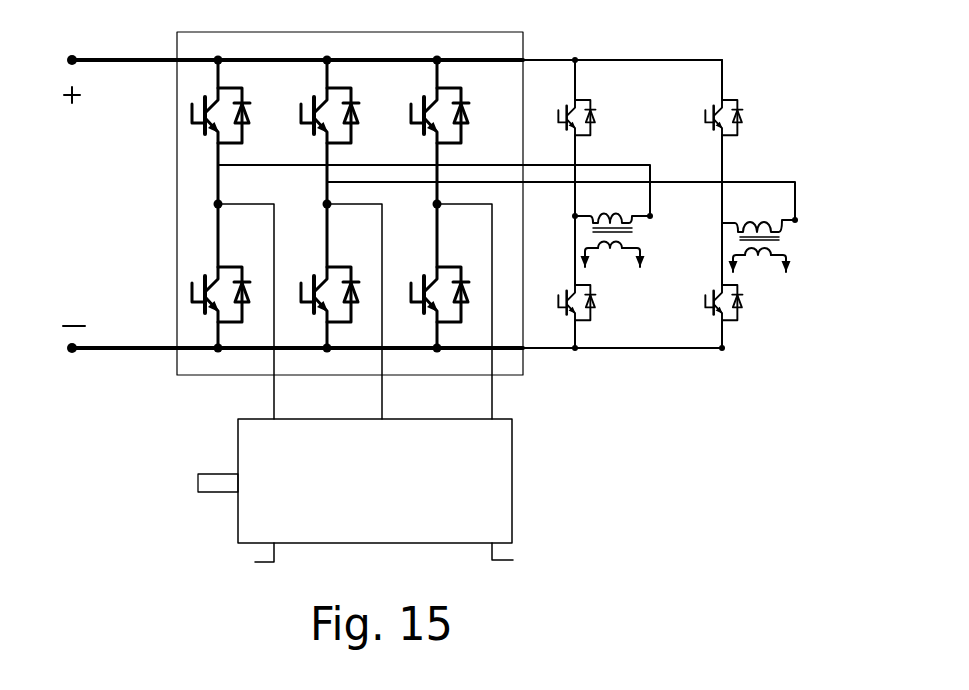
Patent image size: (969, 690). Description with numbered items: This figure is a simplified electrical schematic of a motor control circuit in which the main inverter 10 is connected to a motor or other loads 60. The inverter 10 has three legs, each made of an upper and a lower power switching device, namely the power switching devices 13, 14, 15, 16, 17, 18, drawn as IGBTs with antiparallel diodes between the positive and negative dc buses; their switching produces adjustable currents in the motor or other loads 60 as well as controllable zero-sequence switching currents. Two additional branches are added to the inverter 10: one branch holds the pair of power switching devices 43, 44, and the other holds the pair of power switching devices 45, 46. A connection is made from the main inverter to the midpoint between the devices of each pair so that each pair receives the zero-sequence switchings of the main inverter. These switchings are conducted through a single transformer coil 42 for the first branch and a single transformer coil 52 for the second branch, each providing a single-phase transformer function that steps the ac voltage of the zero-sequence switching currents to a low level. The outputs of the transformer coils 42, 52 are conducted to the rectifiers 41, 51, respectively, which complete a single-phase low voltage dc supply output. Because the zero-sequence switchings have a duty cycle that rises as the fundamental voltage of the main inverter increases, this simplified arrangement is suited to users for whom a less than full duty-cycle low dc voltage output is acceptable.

The inverter 10 is at (527, 55).
The power switching device 13 is at (188, 125).
The power switching device 14 is at (185, 300).
The power switching device 15 is at (299, 121).
The power switching device 16 is at (298, 298).
The power switching device 17 is at (410, 119).
The power switching device 18 is at (408, 298).
The rectifier 41 is at (619, 287).
The transformer coil 42 is at (593, 240).
The power switching device 43 is at (560, 121).
The power switching device 44 is at (566, 299).
The power switching device 45 is at (708, 120).
The power switching device 46 is at (712, 299).
The rectifier 51 is at (767, 295).
The transformer coil 52 is at (733, 232).
The motor or other loads 60 is at (236, 467).